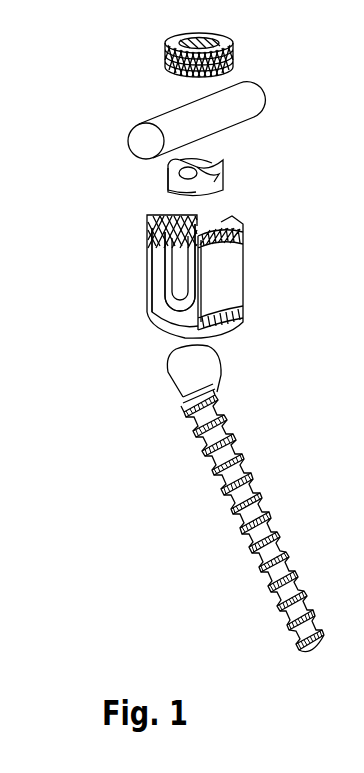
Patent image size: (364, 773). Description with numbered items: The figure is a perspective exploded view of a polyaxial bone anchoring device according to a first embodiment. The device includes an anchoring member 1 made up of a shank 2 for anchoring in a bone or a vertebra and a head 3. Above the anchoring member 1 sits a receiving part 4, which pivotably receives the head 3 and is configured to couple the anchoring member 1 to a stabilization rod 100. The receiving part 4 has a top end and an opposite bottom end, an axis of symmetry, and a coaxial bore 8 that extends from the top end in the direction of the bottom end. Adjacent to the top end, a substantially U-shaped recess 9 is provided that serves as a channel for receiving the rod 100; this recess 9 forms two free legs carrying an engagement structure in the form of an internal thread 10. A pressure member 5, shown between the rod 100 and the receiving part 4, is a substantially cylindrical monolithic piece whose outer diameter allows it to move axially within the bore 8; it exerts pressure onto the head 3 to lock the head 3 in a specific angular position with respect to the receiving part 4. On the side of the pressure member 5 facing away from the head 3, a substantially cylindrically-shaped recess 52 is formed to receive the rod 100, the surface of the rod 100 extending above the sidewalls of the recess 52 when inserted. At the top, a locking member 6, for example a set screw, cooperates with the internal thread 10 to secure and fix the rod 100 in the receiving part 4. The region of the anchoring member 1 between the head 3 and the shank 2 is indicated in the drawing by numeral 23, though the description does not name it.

The anchoring member 1 is at (218, 498).
The shank 2 is at (260, 477).
The head 3 is at (172, 388).
The receiving part 4 is at (246, 264).
The pressure member 5 is at (228, 183).
The locking member 6 is at (233, 42).
The coaxial bore 8 is at (152, 263).
The U-shaped recess 9 is at (152, 278).
The internal thread 10 is at (180, 226).
The neck of anchoring element 23 is at (222, 380).
The cylindrically-shaped recess 52 is at (167, 168).
The stabilization rod 100 is at (257, 108).